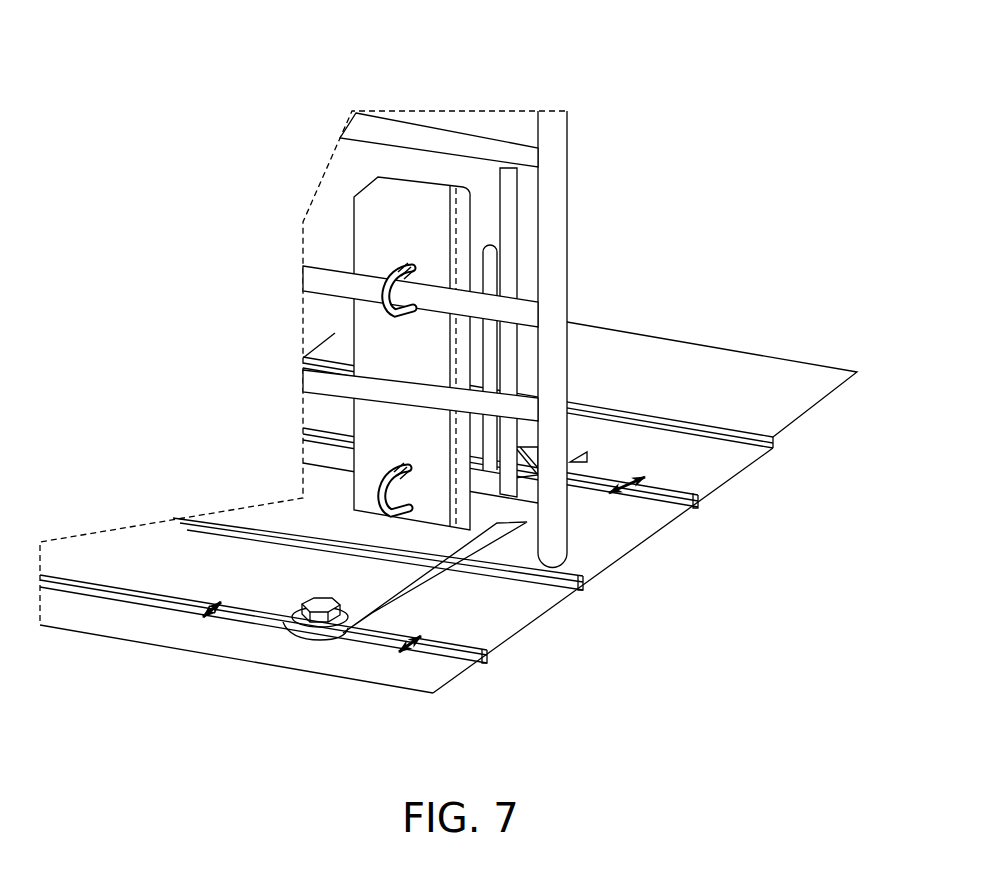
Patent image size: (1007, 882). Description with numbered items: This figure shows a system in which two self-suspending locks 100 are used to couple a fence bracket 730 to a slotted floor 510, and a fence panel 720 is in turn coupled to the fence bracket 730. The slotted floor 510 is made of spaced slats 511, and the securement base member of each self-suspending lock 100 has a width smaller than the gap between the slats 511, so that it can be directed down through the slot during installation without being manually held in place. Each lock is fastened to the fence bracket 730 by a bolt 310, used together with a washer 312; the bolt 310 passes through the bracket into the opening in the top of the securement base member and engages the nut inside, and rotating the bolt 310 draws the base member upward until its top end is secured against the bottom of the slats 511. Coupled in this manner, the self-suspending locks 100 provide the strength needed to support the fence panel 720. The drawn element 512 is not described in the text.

The self-suspending lock 100 is at (695, 503).
The bolt 310 is at (530, 446).
The washer 312 is at (312, 622).
The slotted floor 510 is at (627, 82).
The slats 511 is at (760, 448).
The end block 512 is at (687, 507).
The fence panel 720 is at (486, 110).
The fence bracket 730 is at (357, 187).